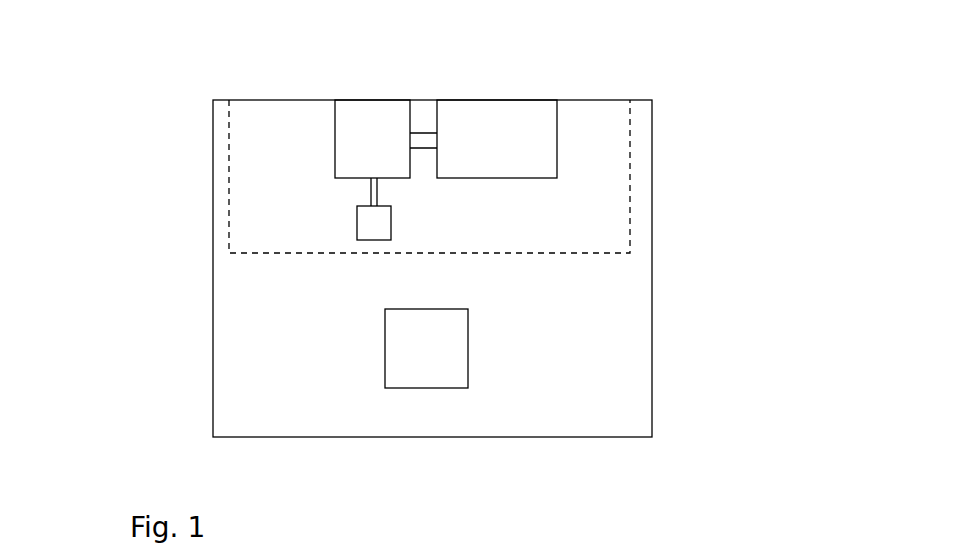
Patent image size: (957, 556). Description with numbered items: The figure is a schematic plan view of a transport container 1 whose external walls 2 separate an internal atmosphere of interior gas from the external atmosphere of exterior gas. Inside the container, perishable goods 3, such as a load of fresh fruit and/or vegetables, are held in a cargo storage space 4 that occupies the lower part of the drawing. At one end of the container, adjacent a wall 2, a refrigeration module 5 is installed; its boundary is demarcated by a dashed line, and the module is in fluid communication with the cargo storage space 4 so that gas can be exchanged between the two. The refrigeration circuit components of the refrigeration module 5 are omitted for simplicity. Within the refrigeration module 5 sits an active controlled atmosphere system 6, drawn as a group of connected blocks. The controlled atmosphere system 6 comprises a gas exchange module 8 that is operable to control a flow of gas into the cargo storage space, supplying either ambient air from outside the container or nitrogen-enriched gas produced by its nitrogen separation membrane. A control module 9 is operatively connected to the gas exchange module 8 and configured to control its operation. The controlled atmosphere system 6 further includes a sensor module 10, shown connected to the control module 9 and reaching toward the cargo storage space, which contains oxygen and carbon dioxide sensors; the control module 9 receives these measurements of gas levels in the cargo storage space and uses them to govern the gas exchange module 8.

The transport container 1 is at (172, 189).
The external walls 2 is at (652, 437).
The perishable goods 3 is at (418, 388).
The cargo storage space 4 is at (305, 344).
The refrigeration module 5 is at (602, 253).
The active controlled atmosphere system 6 is at (603, 191).
The gas exchange module 8 is at (558, 114).
The control module 9 is at (410, 112).
The sensor module 10 is at (357, 221).